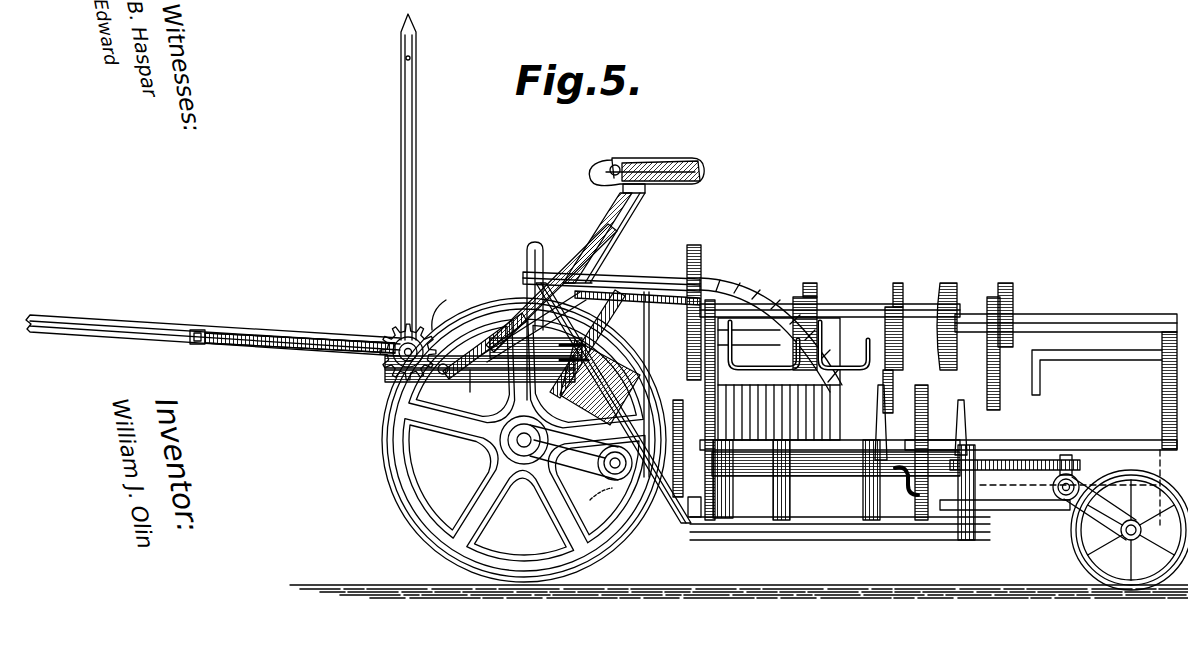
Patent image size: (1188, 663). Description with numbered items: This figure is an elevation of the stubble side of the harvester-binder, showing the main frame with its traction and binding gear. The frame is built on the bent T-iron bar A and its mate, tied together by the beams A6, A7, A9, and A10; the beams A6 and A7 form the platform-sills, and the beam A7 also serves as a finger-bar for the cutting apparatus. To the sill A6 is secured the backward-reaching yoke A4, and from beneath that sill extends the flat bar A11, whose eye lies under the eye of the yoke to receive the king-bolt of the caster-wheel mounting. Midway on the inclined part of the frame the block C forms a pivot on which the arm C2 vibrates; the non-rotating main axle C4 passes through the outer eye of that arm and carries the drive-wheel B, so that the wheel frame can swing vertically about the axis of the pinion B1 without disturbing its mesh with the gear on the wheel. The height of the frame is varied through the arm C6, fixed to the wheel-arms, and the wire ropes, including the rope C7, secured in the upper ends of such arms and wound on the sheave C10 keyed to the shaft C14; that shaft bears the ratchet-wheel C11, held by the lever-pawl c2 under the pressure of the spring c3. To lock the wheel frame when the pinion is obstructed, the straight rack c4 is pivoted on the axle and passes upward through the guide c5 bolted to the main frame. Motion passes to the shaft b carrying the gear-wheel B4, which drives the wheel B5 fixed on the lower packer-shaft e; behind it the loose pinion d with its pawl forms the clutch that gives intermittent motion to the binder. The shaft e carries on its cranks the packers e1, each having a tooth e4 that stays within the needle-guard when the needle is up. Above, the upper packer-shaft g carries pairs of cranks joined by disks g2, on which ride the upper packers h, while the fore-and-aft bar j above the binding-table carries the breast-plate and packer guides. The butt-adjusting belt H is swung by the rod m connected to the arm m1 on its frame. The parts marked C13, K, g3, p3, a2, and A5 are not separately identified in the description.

The lower packer-shaft e is at (415, 177).
The sheave C10 is at (405, 348).
The ratchet-wheel C11 is at (388, 380).
The lever-pawl c2 is at (443, 375).
The spring c3 is at (470, 392).
The wire rope C7 is at (485, 346).
The main axle C4 is at (443, 306).
The drive-wheel B is at (524, 440).
The shaft C14 is at (500, 452).
The arm C2 is at (585, 460).
The pivot block C is at (620, 463).
The pinion B1 is at (595, 501).
The brake block C13 is at (600, 382).
The arm C6 is at (523, 298).
The rod m is at (640, 272).
The rack c4 is at (592, 344).
The guide c5 is at (584, 346).
The wheel B5 is at (613, 415).
The gear wheel K is at (702, 312).
The gear-wheel B4 is at (678, 398).
The arm m1 is at (838, 378).
The butt-adjusting belt H is at (800, 405).
The upper packers h is at (799, 345).
The gear g3 is at (876, 391).
The post p3 is at (912, 420).
The packer tooth e4 is at (921, 422).
The disk g2 is at (989, 346).
The bar j is at (1087, 320).
The upper packer-shaft g is at (1097, 372).
The bottom rail a2 is at (1041, 436).
The shaft b is at (836, 475).
The beam A9 is at (722, 510).
The beam A7 is at (782, 512).
The frame bar A is at (775, 538).
The beam A10 is at (872, 512).
The sill A6 is at (962, 540).
The pinion d is at (694, 507).
The packers e1 is at (912, 469).
The yoke A4 is at (1020, 470).
The flat bar A11 is at (1025, 510).
The rear wheel arm A5 is at (1082, 487).